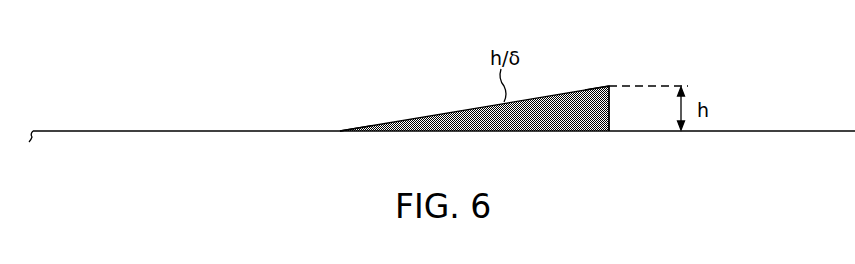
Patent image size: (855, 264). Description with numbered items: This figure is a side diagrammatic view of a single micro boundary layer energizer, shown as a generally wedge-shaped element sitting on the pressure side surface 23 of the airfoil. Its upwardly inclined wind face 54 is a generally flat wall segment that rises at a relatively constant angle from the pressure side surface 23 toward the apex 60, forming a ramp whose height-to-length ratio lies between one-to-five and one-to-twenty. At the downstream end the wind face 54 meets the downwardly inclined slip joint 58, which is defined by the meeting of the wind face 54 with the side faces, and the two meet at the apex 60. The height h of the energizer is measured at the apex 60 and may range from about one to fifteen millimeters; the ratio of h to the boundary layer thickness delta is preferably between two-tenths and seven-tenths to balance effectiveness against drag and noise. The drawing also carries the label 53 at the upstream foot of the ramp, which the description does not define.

The pressure side surface 23 is at (124, 130).
The leading edge of ramp 53 is at (340, 130).
The wind face 54 is at (440, 113).
The slip joint 58 is at (610, 107).
The apex 60 is at (609, 85).